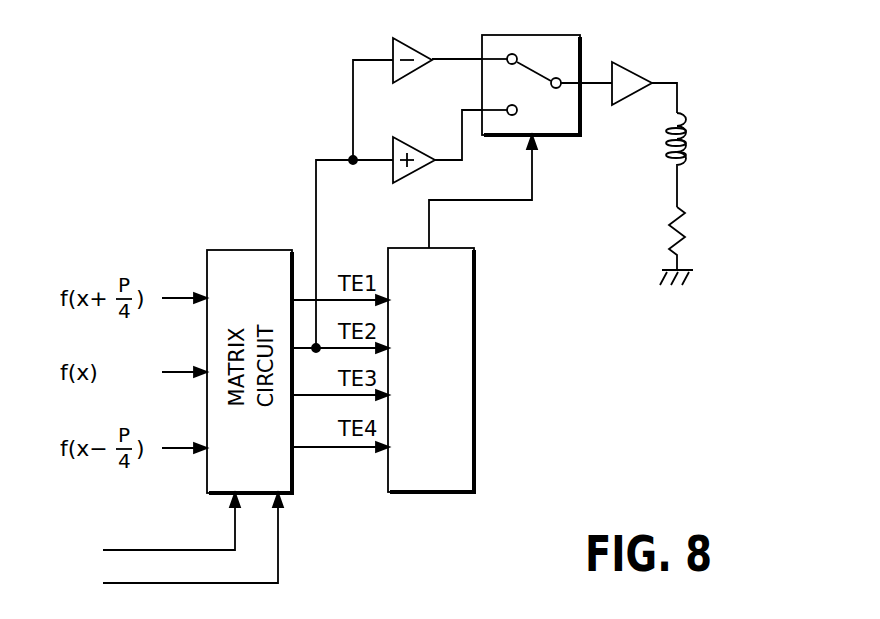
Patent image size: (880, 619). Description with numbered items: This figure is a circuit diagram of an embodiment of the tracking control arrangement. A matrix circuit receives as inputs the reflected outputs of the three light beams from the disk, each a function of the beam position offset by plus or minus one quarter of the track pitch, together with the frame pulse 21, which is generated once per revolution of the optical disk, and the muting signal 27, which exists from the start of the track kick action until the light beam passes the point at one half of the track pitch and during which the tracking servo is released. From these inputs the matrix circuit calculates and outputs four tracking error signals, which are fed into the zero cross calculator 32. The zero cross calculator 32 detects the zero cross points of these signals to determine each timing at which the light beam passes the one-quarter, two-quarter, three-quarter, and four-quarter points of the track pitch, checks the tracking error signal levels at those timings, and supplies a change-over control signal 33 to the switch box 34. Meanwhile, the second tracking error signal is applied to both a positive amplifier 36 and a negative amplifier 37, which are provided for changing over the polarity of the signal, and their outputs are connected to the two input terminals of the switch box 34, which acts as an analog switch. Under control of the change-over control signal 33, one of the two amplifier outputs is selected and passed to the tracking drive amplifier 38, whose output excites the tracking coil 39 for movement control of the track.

The frame pulse 21 is at (123, 550).
The muting signal 27 is at (278, 557).
The zero cross calculator 32 is at (447, 248).
The change-over control signal 33 is at (532, 170).
The switch box 34 is at (523, 35).
The positive amplifier 36 is at (414, 150).
The negative amplifier 37 is at (416, 46).
The tracking drive amplifier 38 is at (625, 65).
The tracking coil 39 is at (688, 143).